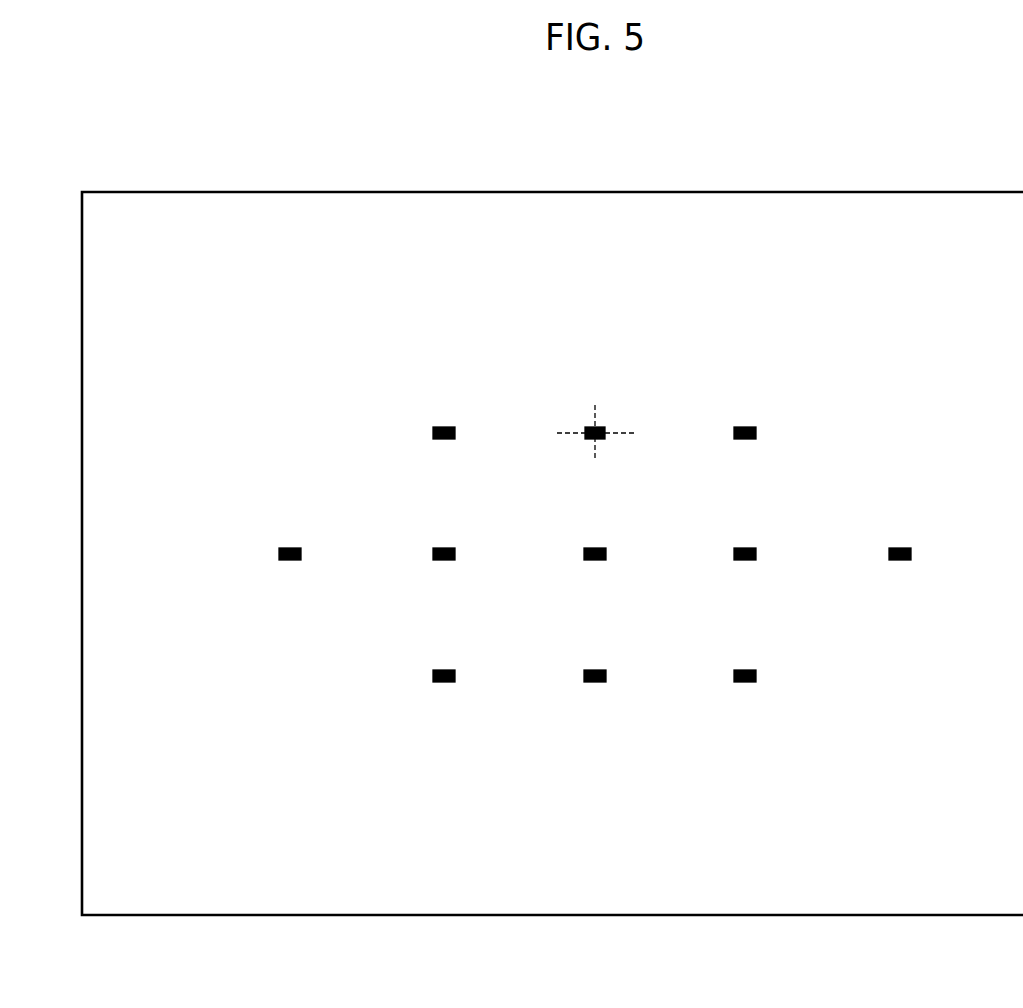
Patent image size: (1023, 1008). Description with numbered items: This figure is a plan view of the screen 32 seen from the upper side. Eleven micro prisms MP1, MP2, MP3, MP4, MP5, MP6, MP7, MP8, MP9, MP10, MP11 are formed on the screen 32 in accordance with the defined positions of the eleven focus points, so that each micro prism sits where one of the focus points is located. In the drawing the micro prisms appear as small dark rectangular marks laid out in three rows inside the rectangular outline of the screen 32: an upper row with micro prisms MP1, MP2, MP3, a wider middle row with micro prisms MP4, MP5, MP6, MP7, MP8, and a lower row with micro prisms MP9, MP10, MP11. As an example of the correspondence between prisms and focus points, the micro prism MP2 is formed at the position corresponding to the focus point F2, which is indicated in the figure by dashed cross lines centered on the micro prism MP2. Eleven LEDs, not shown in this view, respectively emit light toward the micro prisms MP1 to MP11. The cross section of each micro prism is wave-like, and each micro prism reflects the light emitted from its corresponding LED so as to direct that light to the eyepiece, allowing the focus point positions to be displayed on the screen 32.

The screen 32 is at (817, 190).
The micro prism MP1 is at (444, 426).
The micro prism MP2 is at (594, 426).
The micro prism MP3 is at (745, 426).
The micro prism MP4 is at (290, 547).
The micro prism MP5 is at (444, 547).
The micro prism MP6 is at (595, 547).
The micro prism MP7 is at (745, 547).
The micro prism MP8 is at (900, 547).
The micro prism MP9 is at (444, 669).
The micro prism MP10 is at (595, 669).
The micro prism MP11 is at (745, 669).
The focus point F2 is at (606, 431).